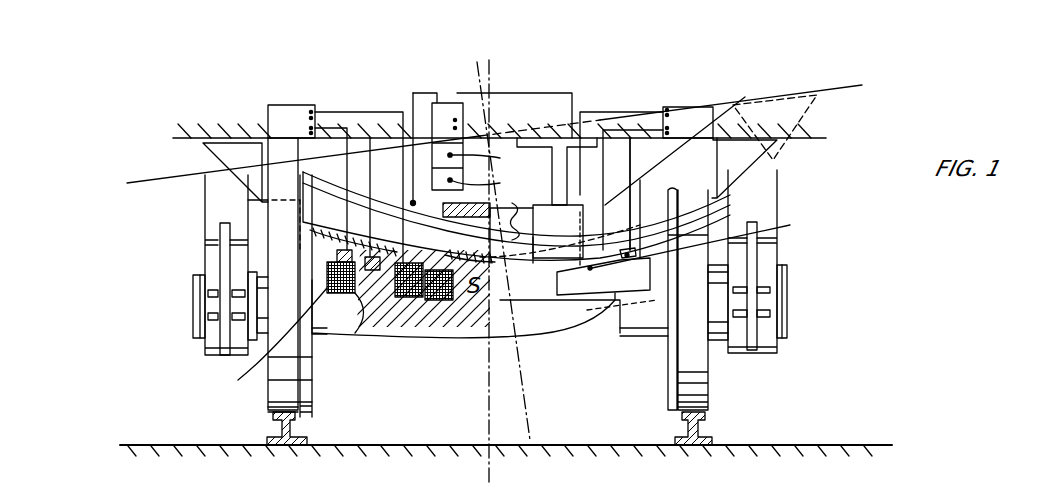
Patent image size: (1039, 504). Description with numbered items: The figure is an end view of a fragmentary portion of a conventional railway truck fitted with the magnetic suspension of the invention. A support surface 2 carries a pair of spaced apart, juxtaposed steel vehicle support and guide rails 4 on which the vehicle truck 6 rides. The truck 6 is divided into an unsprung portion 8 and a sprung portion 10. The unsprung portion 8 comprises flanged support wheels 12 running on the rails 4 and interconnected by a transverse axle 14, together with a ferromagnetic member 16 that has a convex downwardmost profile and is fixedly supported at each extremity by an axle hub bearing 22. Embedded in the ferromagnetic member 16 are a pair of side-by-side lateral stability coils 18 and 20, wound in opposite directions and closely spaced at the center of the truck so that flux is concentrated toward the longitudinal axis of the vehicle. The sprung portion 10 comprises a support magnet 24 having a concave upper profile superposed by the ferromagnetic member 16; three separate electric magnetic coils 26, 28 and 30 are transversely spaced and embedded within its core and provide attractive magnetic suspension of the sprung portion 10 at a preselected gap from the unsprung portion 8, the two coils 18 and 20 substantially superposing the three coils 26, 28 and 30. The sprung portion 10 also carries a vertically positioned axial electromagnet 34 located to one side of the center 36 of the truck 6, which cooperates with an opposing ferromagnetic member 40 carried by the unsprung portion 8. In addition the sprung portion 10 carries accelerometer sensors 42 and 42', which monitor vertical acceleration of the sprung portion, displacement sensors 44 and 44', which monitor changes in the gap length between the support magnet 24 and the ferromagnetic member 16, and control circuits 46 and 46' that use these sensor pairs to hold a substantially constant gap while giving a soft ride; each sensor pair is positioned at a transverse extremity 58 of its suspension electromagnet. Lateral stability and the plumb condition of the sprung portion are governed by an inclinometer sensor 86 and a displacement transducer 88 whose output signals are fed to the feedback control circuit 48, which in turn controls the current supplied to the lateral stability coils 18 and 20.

The support surface 2 is at (533, 452).
The vehicle support and guide rails 4 is at (268, 426).
The vehicle truck 6 is at (563, 360).
The unsprung portion 8 is at (645, 178).
The sprung portion 10 is at (593, 328).
The flanged support wheels 12 is at (682, 386).
The transverse axle 14 is at (637, 328).
The ferromagnetic member 16 is at (467, 233).
The electromagnetic coil 18 is at (516, 216).
The electromagnetic coil 20 is at (660, 240).
The axle hub bearing 22 is at (205, 258).
The support magnet 24 is at (437, 325).
The electric magnetic coil 26 is at (338, 296).
The electric magnetic coil 28 is at (440, 313).
The electric magnetic coil 30 is at (568, 310).
The axial electromagnet 34 is at (558, 236).
The center of the truck 36 is at (492, 78).
The ferromagnetic member 40 is at (514, 233).
The accelerometer sensor 42 is at (236, 208).
The bracket 42' is at (560, 316).
The displacement sensor 44 is at (390, 317).
The coil 44' is at (603, 271).
The control circuit 46 is at (259, 136).
The hanger bracket 46' is at (740, 133).
The feedback control circuit 48 is at (443, 102).
The transverse extremity 58 is at (507, 303).
The inclinometer sensor 86 is at (490, 160).
The displacement transducer 88 is at (490, 185).